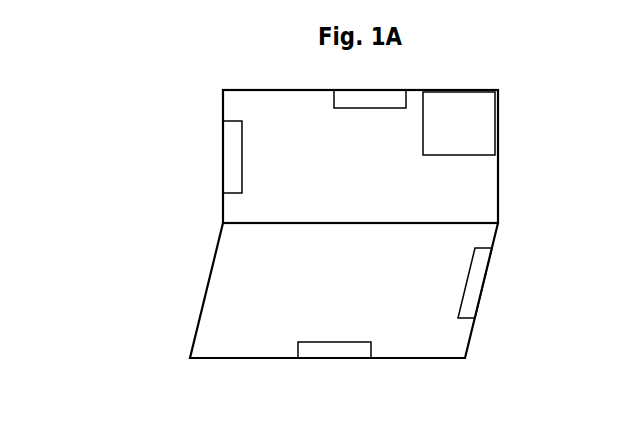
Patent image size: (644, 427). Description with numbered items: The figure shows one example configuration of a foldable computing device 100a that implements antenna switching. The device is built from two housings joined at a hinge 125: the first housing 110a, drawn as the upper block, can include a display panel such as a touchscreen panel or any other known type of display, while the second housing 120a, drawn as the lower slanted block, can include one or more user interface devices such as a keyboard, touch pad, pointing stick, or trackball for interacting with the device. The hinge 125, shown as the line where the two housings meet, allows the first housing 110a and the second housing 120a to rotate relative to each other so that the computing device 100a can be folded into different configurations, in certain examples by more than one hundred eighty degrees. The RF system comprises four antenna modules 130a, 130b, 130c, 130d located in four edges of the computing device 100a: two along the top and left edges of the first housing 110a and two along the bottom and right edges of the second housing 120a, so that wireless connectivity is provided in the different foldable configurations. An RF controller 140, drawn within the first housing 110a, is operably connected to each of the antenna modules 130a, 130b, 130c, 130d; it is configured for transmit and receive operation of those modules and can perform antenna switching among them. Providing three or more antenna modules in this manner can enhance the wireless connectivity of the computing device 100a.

The computing device 100a is at (533, 107).
The first housing 110a is at (310, 137).
The second housing 120a is at (342, 290).
The hinge 125 is at (452, 222).
The antenna module 130a is at (334, 102).
The antenna module 130b is at (225, 168).
The antenna module 130c is at (298, 348).
The antenna module 130d is at (477, 287).
The RF controller 140 is at (459, 123).